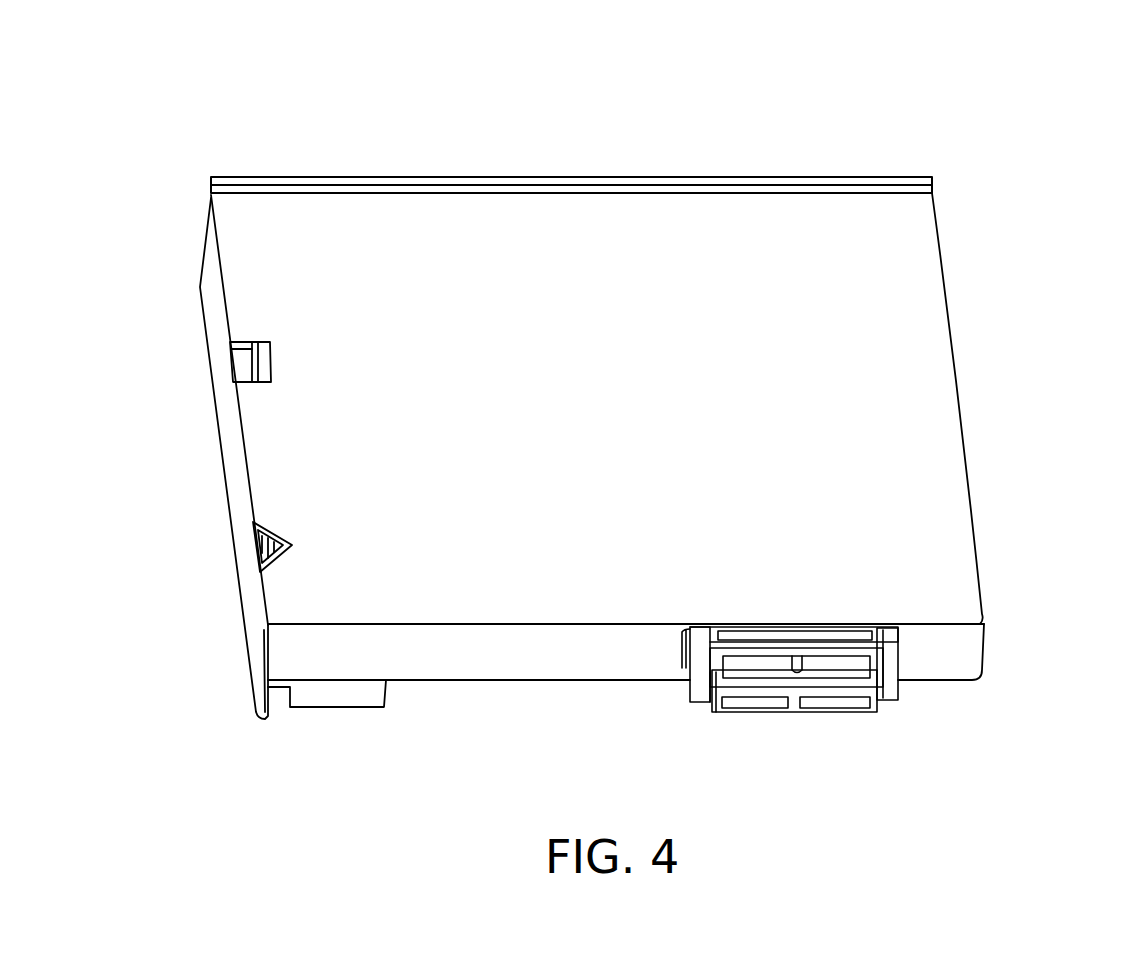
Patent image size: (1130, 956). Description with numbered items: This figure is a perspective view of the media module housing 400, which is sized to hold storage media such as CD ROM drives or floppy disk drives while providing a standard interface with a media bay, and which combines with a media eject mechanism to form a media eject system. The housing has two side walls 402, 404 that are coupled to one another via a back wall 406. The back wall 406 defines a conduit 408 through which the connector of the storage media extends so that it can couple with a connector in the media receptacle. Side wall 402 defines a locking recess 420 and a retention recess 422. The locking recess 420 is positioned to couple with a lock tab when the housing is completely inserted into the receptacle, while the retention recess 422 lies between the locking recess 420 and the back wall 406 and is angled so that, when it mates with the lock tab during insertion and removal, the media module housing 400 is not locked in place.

The media module housing 400 is at (733, 143).
The side wall 402 is at (250, 645).
The side wall 404 is at (988, 488).
The back wall 406 is at (535, 668).
The conduit 408 is at (900, 637).
The locking recess 420 is at (232, 360).
The retention recess 422 is at (257, 542).